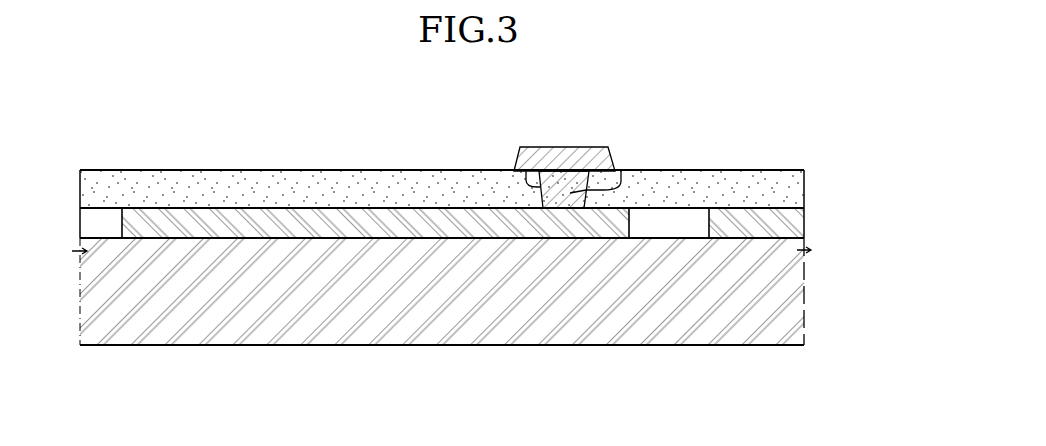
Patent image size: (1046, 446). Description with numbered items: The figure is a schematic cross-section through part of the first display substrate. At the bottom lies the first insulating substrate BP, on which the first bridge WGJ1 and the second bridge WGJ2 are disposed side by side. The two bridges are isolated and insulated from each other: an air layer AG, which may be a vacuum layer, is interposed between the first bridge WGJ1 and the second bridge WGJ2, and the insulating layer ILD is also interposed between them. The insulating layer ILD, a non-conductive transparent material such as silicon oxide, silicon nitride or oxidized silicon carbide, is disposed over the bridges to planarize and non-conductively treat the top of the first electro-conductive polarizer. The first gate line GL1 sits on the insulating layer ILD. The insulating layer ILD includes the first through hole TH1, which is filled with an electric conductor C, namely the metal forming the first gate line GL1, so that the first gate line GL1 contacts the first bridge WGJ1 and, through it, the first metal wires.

The first through hole TH1 is at (527, 147).
The first gate line GL1 is at (577, 155).
The electric conductor C is at (617, 165).
The insulating layer ILD is at (800, 192).
The first insulating substrate BP is at (800, 295).
The air layer AG is at (105, 228).
The first bridge WGJ1 is at (380, 228).
The second bridge WGJ2 is at (758, 228).